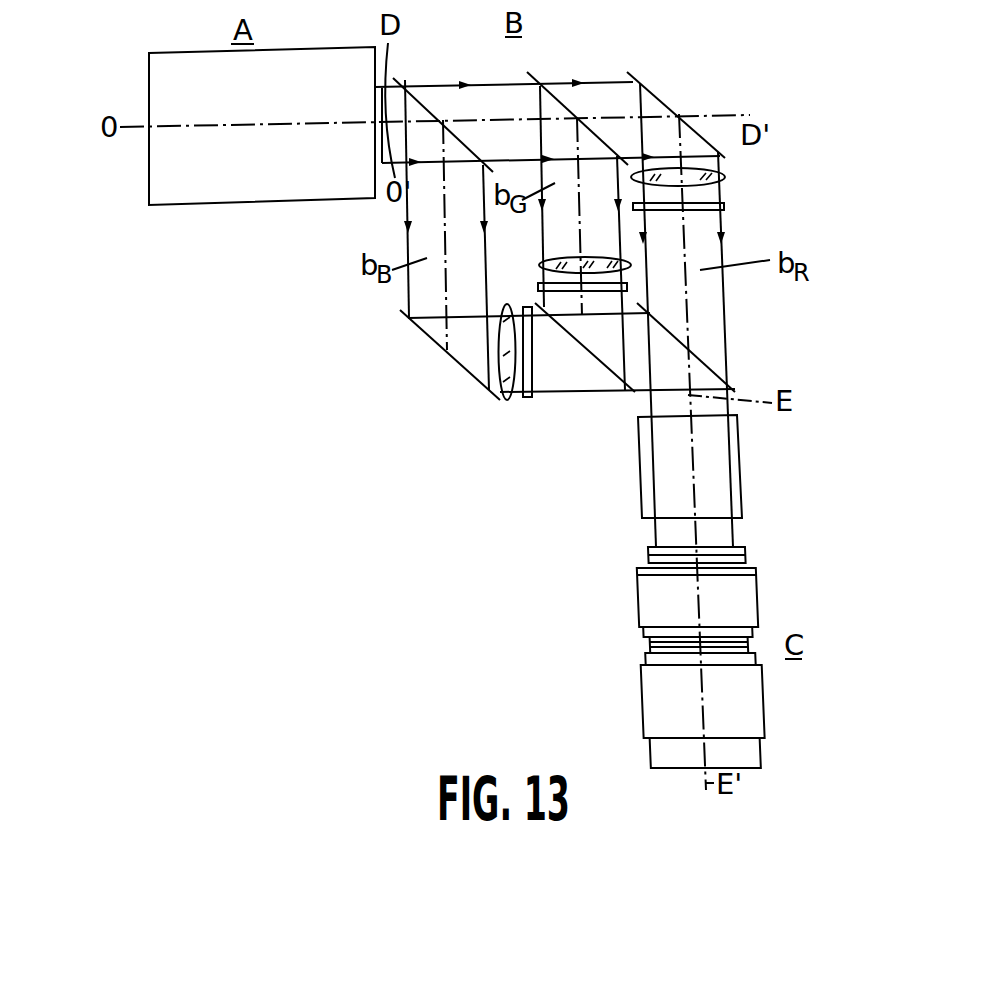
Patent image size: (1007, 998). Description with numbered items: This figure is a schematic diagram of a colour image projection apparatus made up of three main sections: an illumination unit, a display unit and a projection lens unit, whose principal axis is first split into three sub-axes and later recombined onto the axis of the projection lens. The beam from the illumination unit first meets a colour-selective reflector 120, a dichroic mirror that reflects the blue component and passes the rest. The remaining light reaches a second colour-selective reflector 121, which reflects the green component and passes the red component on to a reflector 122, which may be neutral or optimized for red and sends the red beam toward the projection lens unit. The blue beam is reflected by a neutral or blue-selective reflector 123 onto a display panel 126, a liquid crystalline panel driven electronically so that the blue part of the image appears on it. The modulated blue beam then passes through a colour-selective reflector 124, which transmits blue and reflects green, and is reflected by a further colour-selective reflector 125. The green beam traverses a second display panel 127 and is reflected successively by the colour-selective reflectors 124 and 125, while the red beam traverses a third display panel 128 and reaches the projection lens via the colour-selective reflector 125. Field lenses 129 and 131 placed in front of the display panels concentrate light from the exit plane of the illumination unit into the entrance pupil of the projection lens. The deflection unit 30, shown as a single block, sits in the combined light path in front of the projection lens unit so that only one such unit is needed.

The colour-selective reflector 120 is at (425, 105).
The second colour-selective reflector 121 is at (557, 98).
The reflector 122 is at (653, 93).
The reflector 123 is at (462, 370).
The colour-selective reflector 124 is at (615, 380).
The colour-selective reflector 125 is at (712, 370).
The display panel 126 is at (527, 397).
The second display panel 127 is at (538, 288).
The third display panel 128 is at (727, 204).
The field lens 129 is at (507, 400).
The field lens 131 is at (727, 175).
The deflection unit 30 is at (742, 468).